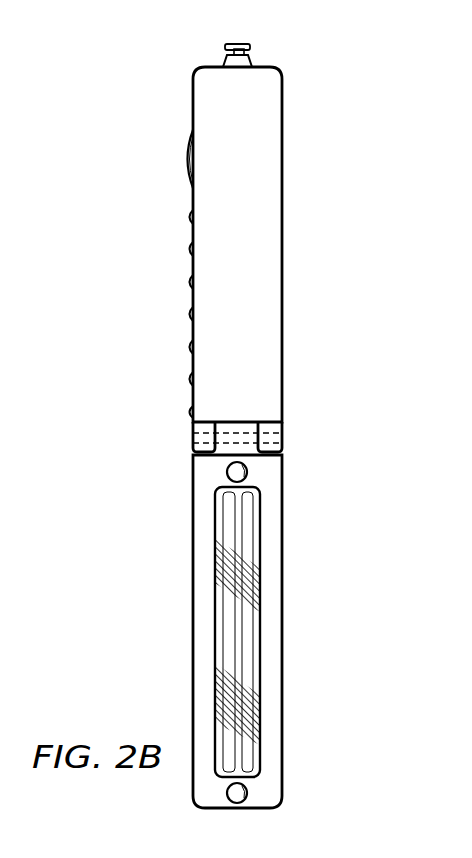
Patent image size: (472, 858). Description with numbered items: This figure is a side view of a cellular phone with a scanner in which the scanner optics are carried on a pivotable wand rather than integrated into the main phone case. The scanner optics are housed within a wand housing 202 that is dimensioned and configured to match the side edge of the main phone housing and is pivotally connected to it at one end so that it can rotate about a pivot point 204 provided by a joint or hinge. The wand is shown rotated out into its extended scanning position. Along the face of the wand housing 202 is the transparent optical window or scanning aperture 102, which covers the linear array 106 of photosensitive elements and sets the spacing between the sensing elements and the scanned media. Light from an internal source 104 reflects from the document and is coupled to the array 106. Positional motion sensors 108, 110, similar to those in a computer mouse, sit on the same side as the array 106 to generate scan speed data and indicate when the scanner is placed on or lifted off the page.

The transparent optical window or lens cover 102 is at (260, 524).
The internal light source 104 is at (221, 614).
The linear array of photosensitive elements 106 is at (250, 660).
The positional motion sensor 108 is at (227, 468).
The positional motion sensor 110 is at (247, 795).
The wand housing 202 is at (283, 604).
The pivot point 204 is at (270, 421).